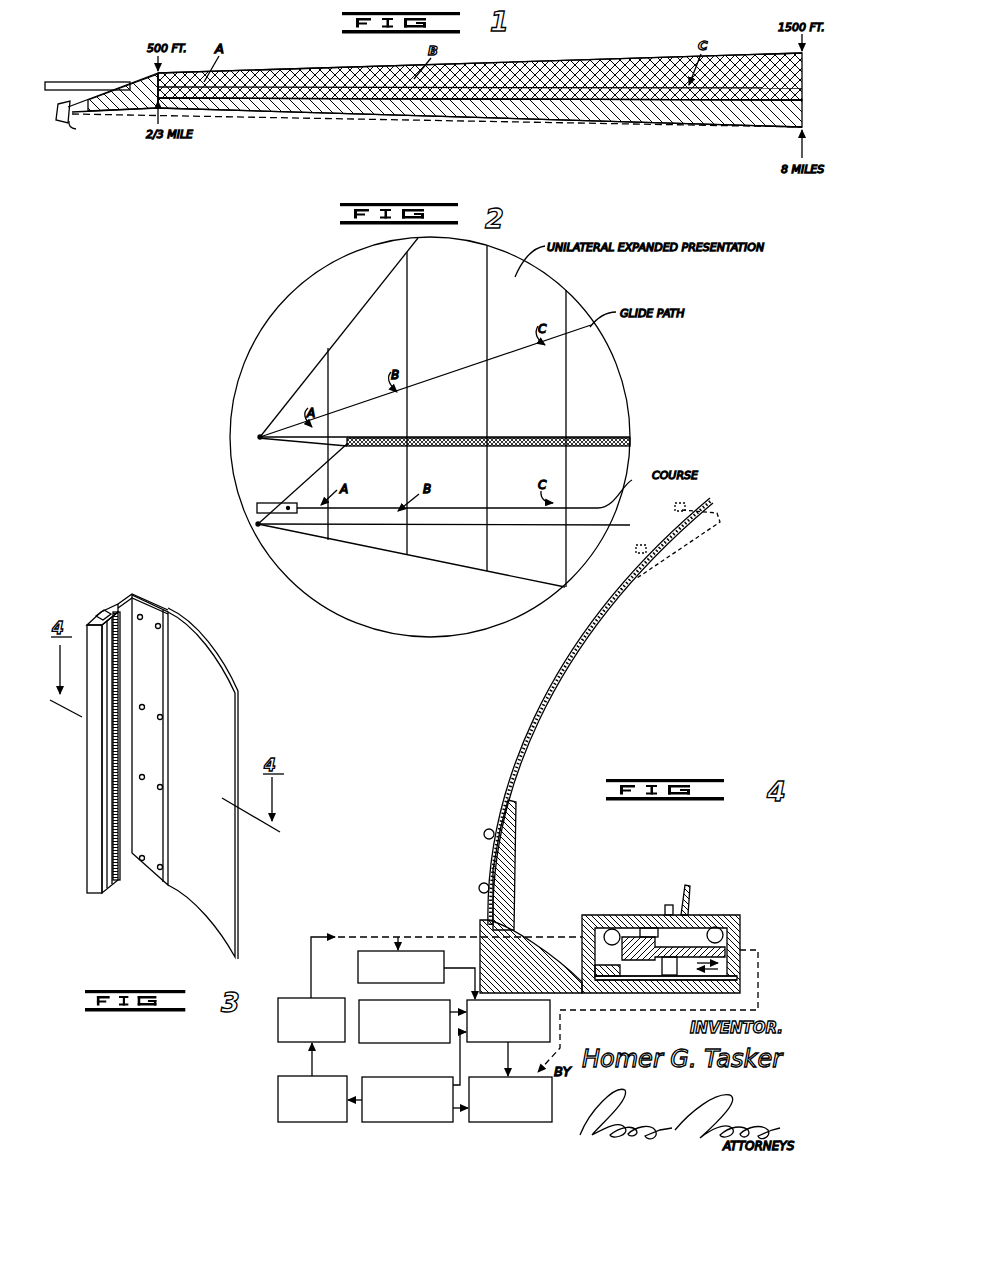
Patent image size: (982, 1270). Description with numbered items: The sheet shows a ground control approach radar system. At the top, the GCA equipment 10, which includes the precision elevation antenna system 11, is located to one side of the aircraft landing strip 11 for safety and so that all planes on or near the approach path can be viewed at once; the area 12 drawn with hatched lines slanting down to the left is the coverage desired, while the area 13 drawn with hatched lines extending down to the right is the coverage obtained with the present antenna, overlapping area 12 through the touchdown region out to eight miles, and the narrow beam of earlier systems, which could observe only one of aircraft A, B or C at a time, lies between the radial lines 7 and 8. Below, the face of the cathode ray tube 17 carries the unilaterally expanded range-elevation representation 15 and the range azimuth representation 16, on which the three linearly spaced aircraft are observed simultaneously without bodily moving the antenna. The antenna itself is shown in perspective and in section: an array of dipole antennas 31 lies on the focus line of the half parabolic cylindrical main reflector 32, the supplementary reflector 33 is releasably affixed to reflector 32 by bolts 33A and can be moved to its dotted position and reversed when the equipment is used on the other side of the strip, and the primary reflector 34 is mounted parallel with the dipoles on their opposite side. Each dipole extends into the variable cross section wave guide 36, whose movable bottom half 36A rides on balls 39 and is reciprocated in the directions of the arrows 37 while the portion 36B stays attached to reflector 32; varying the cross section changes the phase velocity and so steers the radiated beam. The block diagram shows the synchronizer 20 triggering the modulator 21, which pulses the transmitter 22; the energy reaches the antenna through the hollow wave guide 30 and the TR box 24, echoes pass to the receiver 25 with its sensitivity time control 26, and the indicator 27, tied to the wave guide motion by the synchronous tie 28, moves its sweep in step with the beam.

In FIG. 1, the radial line 7 is at (128, 86).
In FIG. 1, the radial line 8 is at (134, 114).
In FIG. 1, the GCA equipment 10 is at (60, 123).
In FIG. 1, the precision elevation antenna system 11 is at (77, 82).
In FIG. 4, the precision elevation antenna system 11 is at (528, 766).
In FIG. 1, the desired coverage area 12 is at (252, 71).
In FIG. 1, the obtained coverage area 13 is at (248, 114).
In FIG. 2, the range-elevation representation 15 is at (317, 381).
In FIG. 2, the range azimuth representation 16 is at (315, 486).
In FIG. 2, the cathode ray tube 17 is at (632, 414).
In FIG. 4, the synchronizer 20 is at (407, 1099).
In FIG. 4, the modulator 21 is at (312, 1099).
In FIG. 4, the transmitter 22 is at (311, 1020).
In FIG. 4, the TR box 24 is at (401, 967).
In FIG. 4, the receiver 25 is at (508, 1021).
In FIG. 4, the sensitivity time control 26 is at (404, 1021).
In FIG. 4, the indicator 27 is at (510, 1099).
In FIG. 4, the synchronous tie 28 is at (577, 1008).
In FIG. 4, the wave guide 30 is at (345, 935).
In FIG. 3, the dipole antennas 31 is at (118, 632).
In FIG. 4, the dipole antennas 31 is at (669, 905).
In FIG. 3, the main reflector 32 is at (212, 678).
In FIG. 4, the main reflector 32 is at (556, 678).
In FIG. 3, the supplementary reflector 33 is at (150, 650).
In FIG. 4, the supplementary reflector 33 is at (512, 858).
In FIG. 3, the bolts 33A is at (141, 616).
In FIG. 4, the bolts 33A is at (486, 834).
In FIG. 3, the primary reflector 34 is at (113, 760).
In FIG. 4, the primary reflector 34 is at (688, 905).
In FIG. 3, the variable cross section wave guide 36 is at (104, 612).
In FIG. 4, the variable cross section wave guide 36 is at (677, 937).
In FIG. 4, the movable bottom half of wave guide 36A is at (662, 965).
In FIG. 4, the stationary wave guide portion 36B is at (656, 930).
In FIG. 4, the arrows 37 is at (710, 963).
In FIG. 4, the balls 39 is at (608, 930).